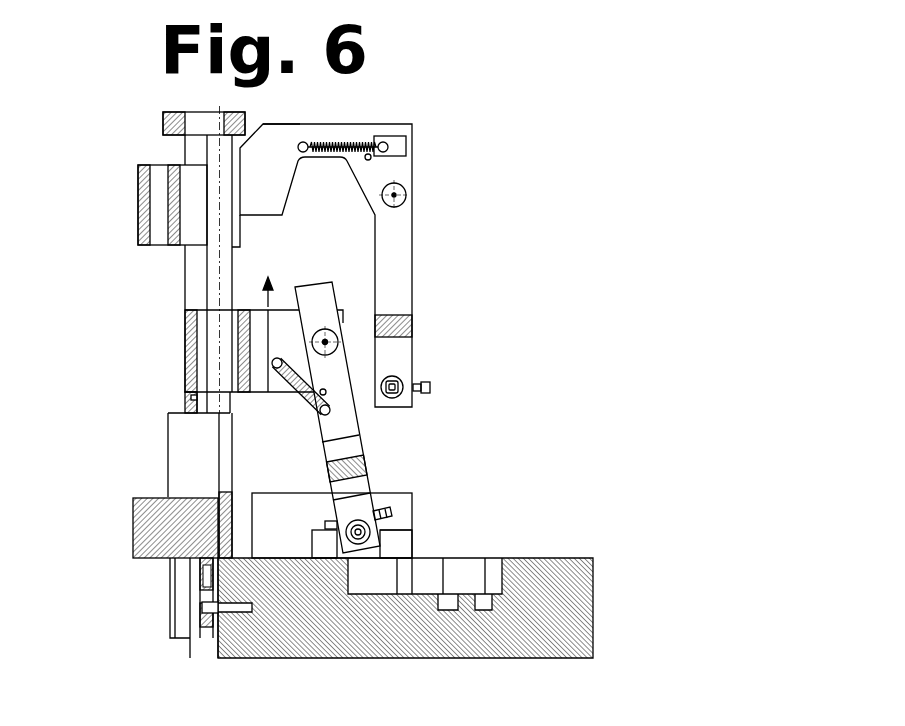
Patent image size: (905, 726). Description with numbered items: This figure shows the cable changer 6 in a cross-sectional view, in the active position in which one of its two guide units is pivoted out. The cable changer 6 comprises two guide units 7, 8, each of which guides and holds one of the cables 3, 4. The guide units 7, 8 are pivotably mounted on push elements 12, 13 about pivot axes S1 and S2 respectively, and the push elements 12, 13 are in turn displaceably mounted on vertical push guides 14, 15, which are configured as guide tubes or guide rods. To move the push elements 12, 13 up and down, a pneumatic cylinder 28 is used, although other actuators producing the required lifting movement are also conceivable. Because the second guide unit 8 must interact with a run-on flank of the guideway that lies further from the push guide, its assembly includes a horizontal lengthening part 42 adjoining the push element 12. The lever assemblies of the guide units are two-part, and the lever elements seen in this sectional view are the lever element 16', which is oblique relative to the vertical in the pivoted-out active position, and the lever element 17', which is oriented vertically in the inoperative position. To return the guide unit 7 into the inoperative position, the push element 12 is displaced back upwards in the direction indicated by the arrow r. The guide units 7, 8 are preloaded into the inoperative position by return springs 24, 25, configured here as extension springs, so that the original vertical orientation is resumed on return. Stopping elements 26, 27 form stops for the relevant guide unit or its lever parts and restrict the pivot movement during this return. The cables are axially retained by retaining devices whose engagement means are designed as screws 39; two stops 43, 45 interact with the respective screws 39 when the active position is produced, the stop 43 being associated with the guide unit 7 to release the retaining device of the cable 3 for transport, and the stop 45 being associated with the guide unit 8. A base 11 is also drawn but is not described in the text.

The cable 3 is at (375, 523).
The cable 4 is at (397, 394).
The cable changer 6 is at (82, 127).
The guide unit 7 is at (372, 543).
The guide unit 8 is at (395, 379).
The base plate 11 is at (594, 618).
The push element 12 is at (188, 375).
The push element 13 is at (138, 215).
The push guide 14 is at (210, 285).
The push guide 15 is at (197, 148).
The lever element 16' is at (386, 417).
The lever element 17' is at (371, 265).
The return spring 24 is at (303, 388).
The return spring 25 is at (337, 142).
The stopping element 26 is at (297, 366).
The stopping element 27 is at (374, 157).
The pneumatic cylinder 28 is at (183, 477).
The screw 39 is at (330, 523).
The horizontal lengthening part 42 is at (277, 135).
The stop 43 is at (327, 545).
The stop 45 is at (405, 548).
The pivot axis S1 is at (327, 343).
The pivot axis S2 is at (396, 194).
The arrow r is at (273, 286).